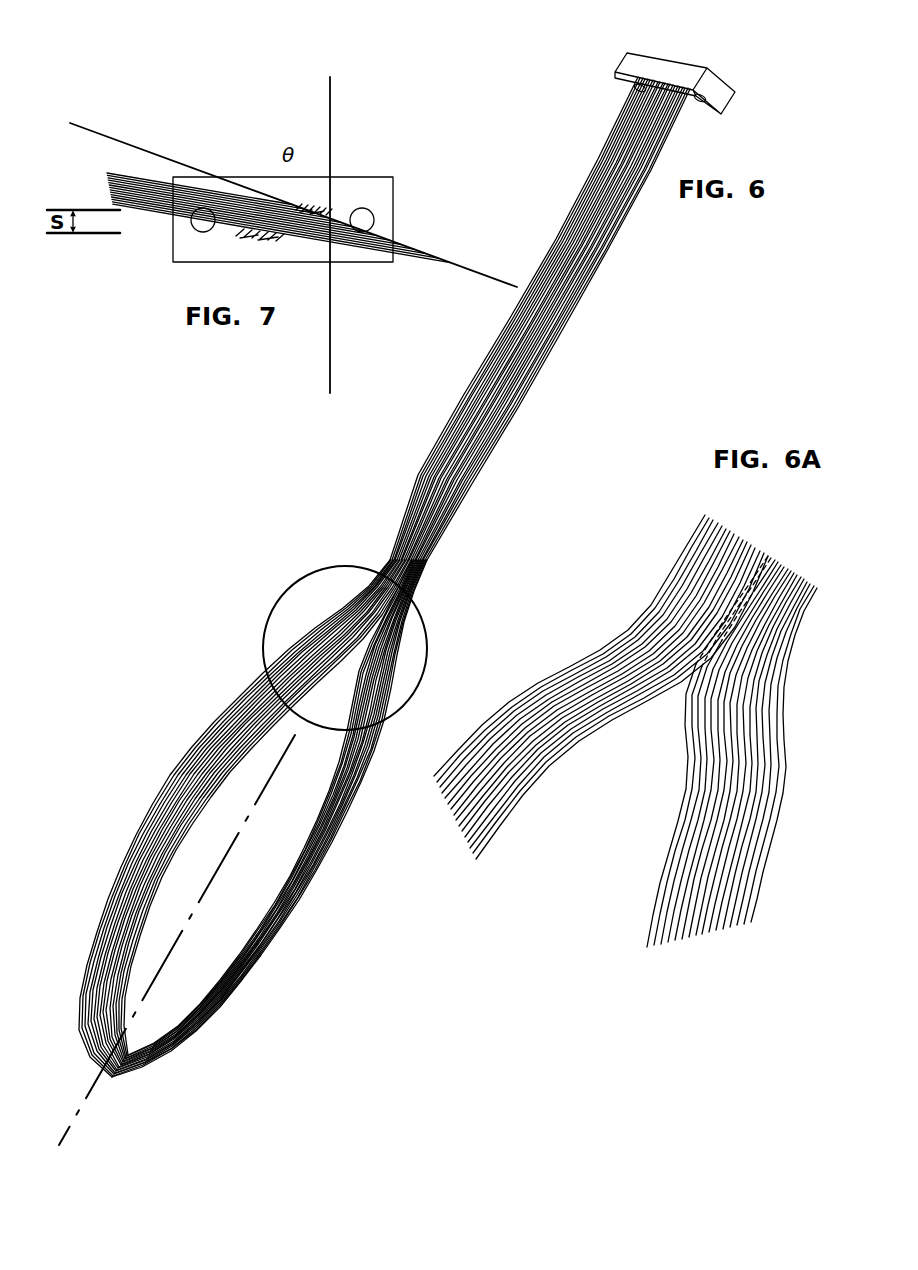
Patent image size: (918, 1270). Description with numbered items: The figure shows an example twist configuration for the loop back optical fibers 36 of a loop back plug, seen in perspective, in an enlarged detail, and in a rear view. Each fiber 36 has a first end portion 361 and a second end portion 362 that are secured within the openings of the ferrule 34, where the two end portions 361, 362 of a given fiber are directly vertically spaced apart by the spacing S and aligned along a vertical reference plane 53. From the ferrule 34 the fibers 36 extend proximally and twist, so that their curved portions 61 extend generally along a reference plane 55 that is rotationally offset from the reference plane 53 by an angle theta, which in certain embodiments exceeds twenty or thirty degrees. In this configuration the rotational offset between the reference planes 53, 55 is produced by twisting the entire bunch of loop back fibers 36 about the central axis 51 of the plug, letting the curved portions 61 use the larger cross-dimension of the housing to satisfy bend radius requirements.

In FIG. 7, the ferrule 34 is at (393, 190).
In FIG. 6, the ferrule 34 is at (700, 70).
In FIG. 7, the loop back optical fibers 36 is at (304, 236).
In FIG. 6, the loop back optical fibers 36 is at (384, 577).
In FIG. 6A, the loop back optical fibers 36 is at (625, 731).
In FIG. 6, the first end portion 361 is at (685, 92).
In FIG. 6, the second end portion 362 is at (695, 103).
In FIG. 6, the central axis 51 is at (210, 880).
In FIG. 7, the vertical reference plane 53 is at (332, 110).
In FIG. 7, the reference plane 55 is at (120, 142).
In FIG. 7, the curved portion 61 is at (310, 247).
In FIG. 6, the curved portion 61 is at (243, 980).
In FIG. 6A, the curved portion 61 is at (492, 728).